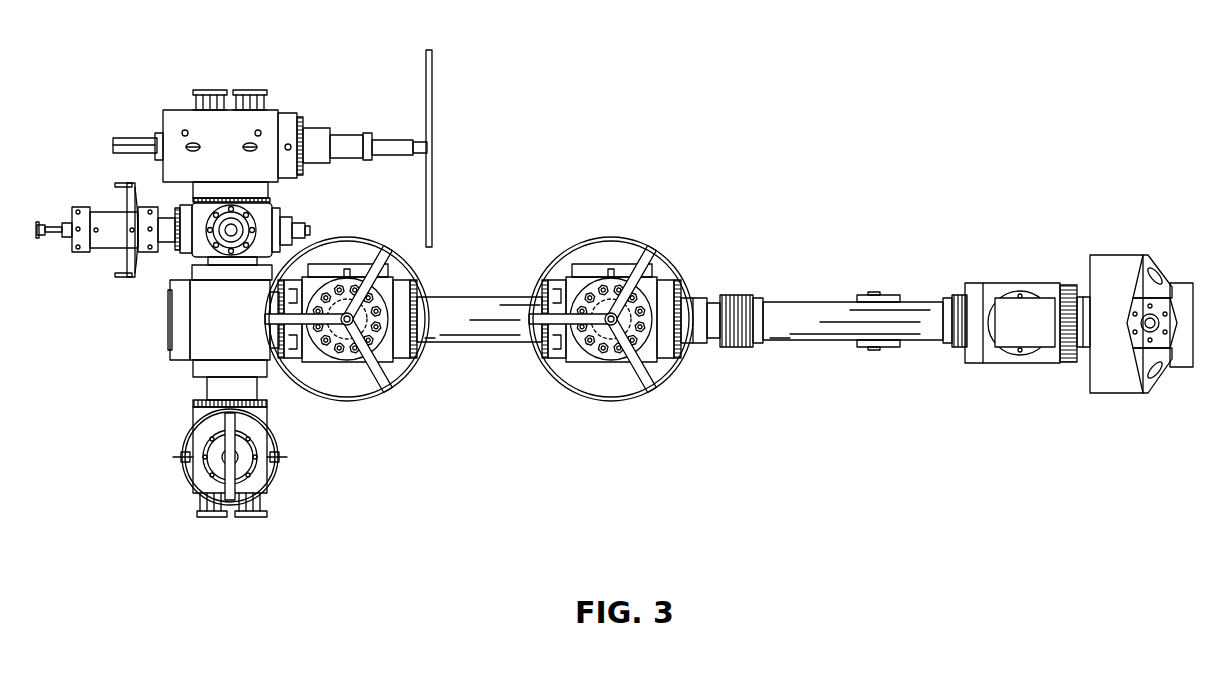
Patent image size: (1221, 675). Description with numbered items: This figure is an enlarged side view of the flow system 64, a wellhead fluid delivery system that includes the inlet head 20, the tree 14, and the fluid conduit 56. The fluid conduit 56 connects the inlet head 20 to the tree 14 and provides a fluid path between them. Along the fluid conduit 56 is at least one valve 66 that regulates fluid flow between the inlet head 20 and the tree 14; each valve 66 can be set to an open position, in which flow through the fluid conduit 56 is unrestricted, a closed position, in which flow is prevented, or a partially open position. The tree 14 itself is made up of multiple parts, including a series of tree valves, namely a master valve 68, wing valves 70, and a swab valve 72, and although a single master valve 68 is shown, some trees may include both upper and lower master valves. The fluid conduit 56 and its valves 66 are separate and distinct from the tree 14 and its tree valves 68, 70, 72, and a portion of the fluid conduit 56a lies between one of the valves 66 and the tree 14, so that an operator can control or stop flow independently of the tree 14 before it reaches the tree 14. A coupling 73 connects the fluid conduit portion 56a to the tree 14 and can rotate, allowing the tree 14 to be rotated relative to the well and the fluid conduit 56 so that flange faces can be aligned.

The tree 14 is at (232, 82).
The inlet head 20 is at (1113, 270).
The fluid conduit 56 is at (710, 274).
The portion of the fluid conduit 56a is at (480, 343).
The flow system 64 is at (1014, 185).
The valve 66 is at (390, 264).
The master valve 68 is at (200, 473).
The wing valve 70 is at (193, 247).
The swab valve 72 is at (282, 122).
The coupling 73 is at (279, 366).